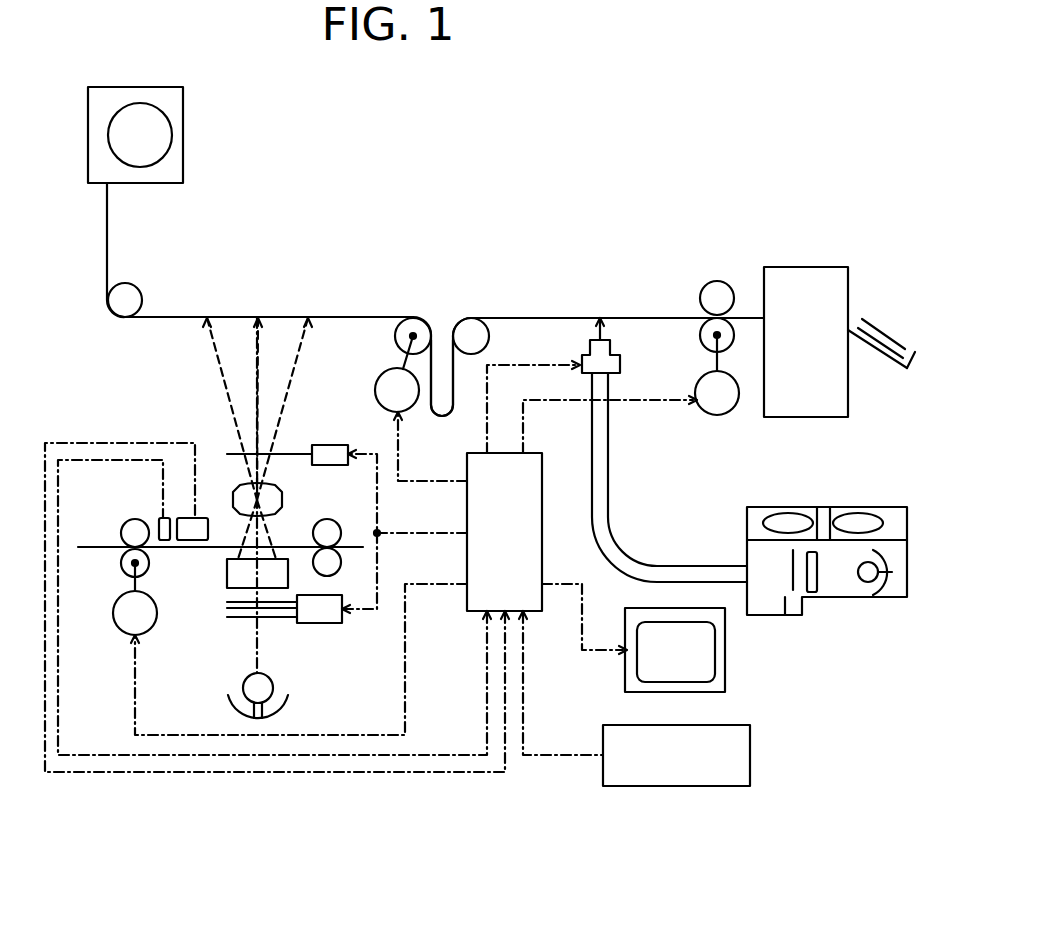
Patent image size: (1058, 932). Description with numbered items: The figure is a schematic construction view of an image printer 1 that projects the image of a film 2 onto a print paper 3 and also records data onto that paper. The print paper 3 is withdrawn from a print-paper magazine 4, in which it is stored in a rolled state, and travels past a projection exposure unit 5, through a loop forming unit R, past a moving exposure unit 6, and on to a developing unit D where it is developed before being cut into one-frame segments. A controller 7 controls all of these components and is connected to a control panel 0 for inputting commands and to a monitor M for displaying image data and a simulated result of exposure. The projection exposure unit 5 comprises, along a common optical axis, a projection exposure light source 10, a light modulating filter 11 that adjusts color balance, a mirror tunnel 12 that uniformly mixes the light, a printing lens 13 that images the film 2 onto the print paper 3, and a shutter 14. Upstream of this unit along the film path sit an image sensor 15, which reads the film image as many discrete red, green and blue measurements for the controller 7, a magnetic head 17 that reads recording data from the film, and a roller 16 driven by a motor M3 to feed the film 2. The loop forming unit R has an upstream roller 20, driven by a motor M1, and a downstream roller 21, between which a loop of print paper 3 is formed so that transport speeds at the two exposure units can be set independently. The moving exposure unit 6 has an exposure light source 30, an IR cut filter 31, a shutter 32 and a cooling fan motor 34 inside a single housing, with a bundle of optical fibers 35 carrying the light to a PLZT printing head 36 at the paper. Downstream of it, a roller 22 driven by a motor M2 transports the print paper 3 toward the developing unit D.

The image printer 1 is at (500, 222).
The film 2 is at (90, 547).
The print paper 3 is at (177, 318).
The print-paper magazine 4 is at (183, 139).
The projection exposure unit 5 is at (233, 718).
The moving exposure unit 6 is at (603, 303).
The controller 7 is at (542, 505).
The projection exposure light source 10 is at (243, 685).
The light modulating filter 11 is at (272, 625).
The mirror tunnel 12 is at (226, 585).
The printing lens 13 is at (282, 502).
The shutter 14 is at (293, 452).
The image sensor 15 is at (209, 515).
The roller 16 is at (120, 566).
The magnetic head 17 is at (156, 520).
The roller 20 is at (406, 319).
The roller 21 is at (478, 318).
The roller 22 is at (716, 283).
The exposure light source 30 is at (862, 593).
The IR cut filter 31 is at (817, 577).
The shutter 32 is at (793, 572).
The cooling fan motor 34 is at (862, 518).
The bundle of optical fibers 35 is at (622, 543).
The PLZT printing head 36 is at (586, 344).
The loop forming unit R is at (445, 325).
The developing unit D is at (818, 267).
The monitor M is at (725, 680).
The motor M1 is at (378, 385).
The motor M2 is at (700, 378).
The motor M3 is at (118, 630).
The control panel 0 is at (613, 820).